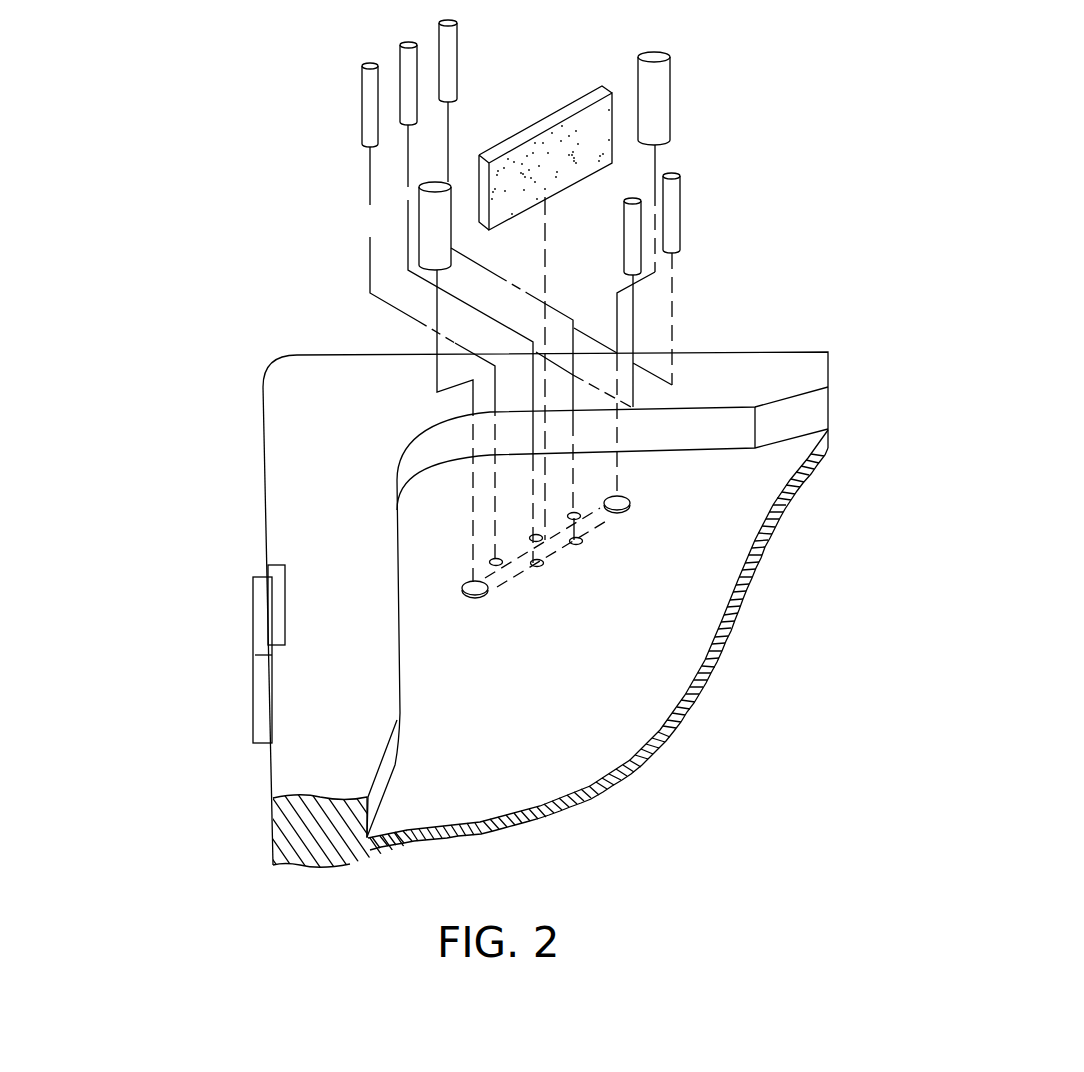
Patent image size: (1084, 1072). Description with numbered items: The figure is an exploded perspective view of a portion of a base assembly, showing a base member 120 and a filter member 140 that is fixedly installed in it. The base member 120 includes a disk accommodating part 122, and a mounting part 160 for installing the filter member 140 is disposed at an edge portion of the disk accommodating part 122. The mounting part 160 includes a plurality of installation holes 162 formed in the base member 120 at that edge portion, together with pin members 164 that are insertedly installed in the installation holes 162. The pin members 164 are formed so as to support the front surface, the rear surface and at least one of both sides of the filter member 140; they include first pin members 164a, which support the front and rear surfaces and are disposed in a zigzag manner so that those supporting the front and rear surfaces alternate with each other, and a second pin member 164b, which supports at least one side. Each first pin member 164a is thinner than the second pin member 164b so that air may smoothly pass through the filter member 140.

The base member 120 is at (277, 480).
The disk accommodating part 122 is at (678, 498).
The filter member 140 is at (600, 123).
The mounting part 160 is at (147, 208).
The installation holes 162 is at (495, 558).
The pin members 164 is at (215, 161).
The first pin members 164a is at (367, 98).
The second pin member 164b is at (432, 205).